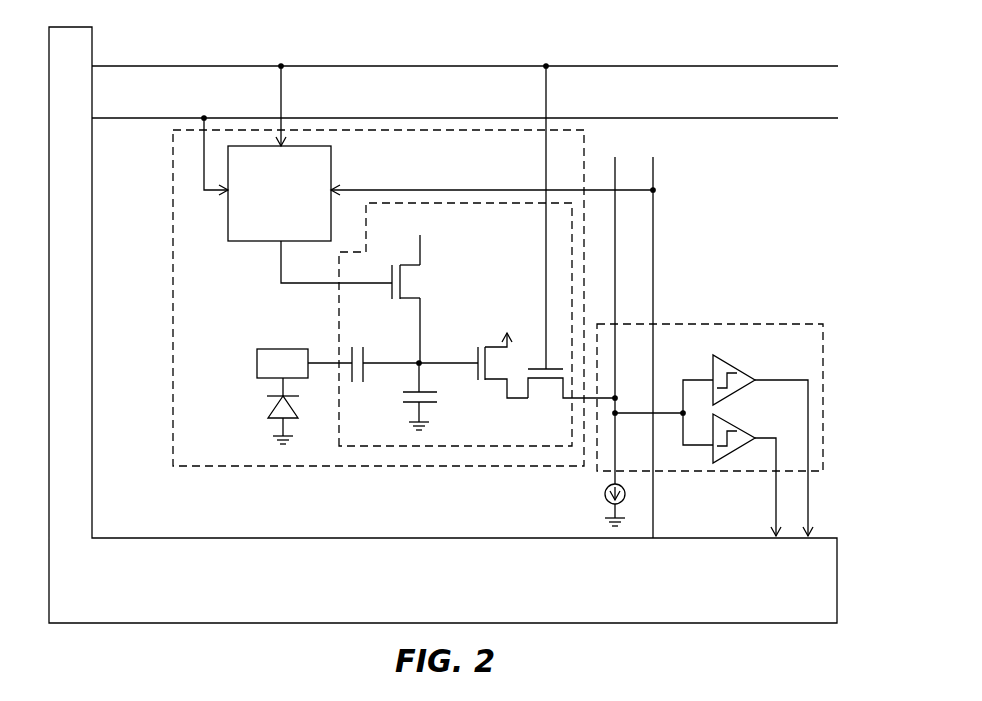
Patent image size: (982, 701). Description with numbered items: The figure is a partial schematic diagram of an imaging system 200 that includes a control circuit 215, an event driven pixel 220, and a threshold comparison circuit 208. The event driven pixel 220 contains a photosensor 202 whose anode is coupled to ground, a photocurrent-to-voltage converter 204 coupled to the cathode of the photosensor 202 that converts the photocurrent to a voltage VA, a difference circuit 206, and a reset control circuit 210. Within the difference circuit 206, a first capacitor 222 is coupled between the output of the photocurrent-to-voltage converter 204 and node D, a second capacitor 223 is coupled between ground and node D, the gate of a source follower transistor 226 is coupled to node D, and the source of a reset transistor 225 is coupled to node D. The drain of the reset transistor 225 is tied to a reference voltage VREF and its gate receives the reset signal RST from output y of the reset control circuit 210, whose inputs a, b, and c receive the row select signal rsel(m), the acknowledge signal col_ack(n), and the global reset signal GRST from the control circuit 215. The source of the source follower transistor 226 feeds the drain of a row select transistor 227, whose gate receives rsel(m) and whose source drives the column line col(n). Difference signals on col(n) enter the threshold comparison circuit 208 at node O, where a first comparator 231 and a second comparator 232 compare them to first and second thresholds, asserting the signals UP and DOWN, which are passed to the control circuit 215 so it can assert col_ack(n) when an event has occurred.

The imaging system 200 is at (800, 18).
The photosensor 202 is at (270, 413).
The photocurrent-to-voltage converter 204 is at (266, 348).
The difference circuit 206 is at (339, 303).
The threshold comparison circuit 208 is at (813, 324).
The reset control circuit 210 is at (331, 148).
The control circuit 215 is at (317, 595).
The event driven pixel 220 is at (172, 452).
The first capacitor 222 is at (368, 340).
The second capacitor 223 is at (401, 408).
The reset transistor 225 is at (429, 279).
The source follower transistor 226 is at (487, 332).
The row select transistor 227 is at (544, 405).
The first comparator 231 is at (723, 361).
The second comparator 232 is at (723, 419).